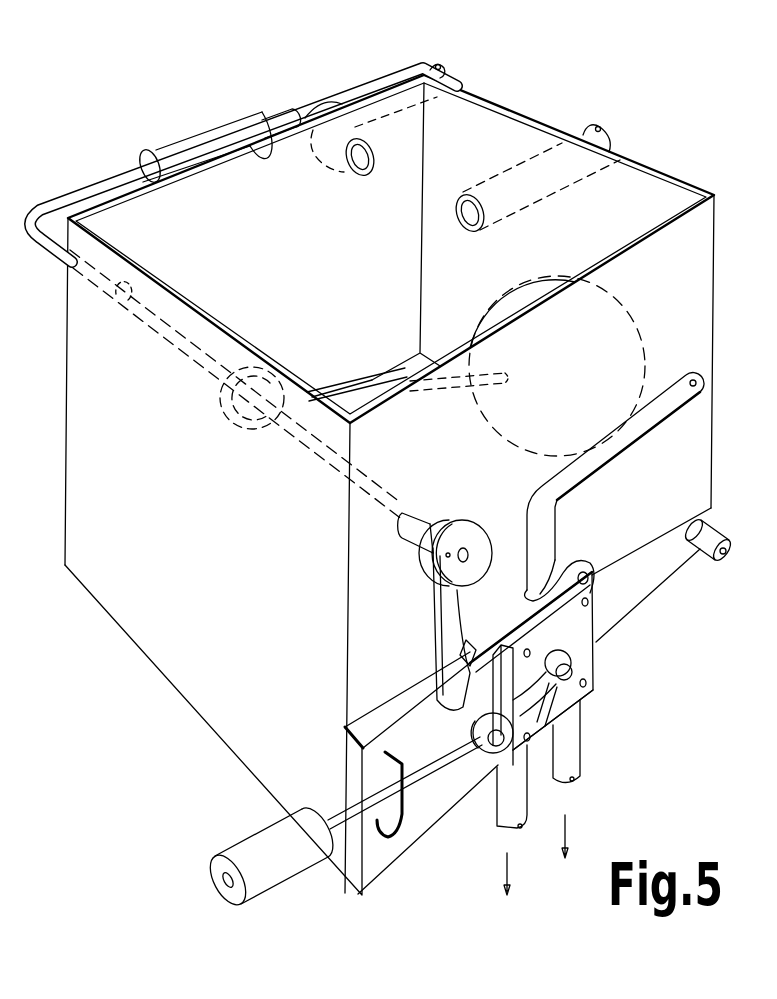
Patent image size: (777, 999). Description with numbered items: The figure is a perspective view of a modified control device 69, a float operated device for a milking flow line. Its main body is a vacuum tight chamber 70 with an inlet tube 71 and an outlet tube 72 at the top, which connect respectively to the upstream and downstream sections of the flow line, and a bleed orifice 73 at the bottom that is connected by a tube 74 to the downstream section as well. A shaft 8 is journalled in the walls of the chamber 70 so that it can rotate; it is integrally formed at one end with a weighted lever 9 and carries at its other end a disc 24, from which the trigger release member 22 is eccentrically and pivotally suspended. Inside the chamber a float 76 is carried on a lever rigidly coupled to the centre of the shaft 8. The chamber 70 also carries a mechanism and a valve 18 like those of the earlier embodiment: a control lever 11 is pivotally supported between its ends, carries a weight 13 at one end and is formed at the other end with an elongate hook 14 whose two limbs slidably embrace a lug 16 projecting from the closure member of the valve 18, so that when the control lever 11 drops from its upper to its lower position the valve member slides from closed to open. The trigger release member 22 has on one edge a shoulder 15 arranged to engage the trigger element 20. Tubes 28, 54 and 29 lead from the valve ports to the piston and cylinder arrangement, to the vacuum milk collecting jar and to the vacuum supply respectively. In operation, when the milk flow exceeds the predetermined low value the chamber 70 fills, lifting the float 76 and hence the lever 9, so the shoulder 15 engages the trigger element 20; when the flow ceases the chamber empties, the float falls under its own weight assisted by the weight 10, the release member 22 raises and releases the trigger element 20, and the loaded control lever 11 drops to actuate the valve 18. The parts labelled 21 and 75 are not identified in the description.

The shaft 8 is at (345, 480).
The weighted lever 9 is at (110, 184).
The weight 10 is at (214, 128).
The control lever 11 is at (365, 806).
The weight 13 is at (252, 886).
The elongate hook 14 is at (540, 728).
The shoulder 15 is at (465, 652).
The lug 16 is at (570, 674).
The valve 18 is at (601, 690).
The trigger element 20 is at (532, 623).
The roller bracket 21 is at (487, 698).
The trigger release member 22 is at (445, 611).
The disc 24 is at (458, 520).
The tube 28 is at (505, 812).
The tube 29 is at (666, 408).
The tube 54 is at (580, 760).
The control device 69 is at (128, 648).
The vacuum tight chamber 70 is at (70, 425).
The inlet tube 71 is at (382, 78).
The outlet tube 72 is at (580, 128).
The bleed orifice 73 is at (703, 524).
The tube 74 is at (707, 550).
The bar 75 is at (347, 387).
The float 76 is at (497, 305).